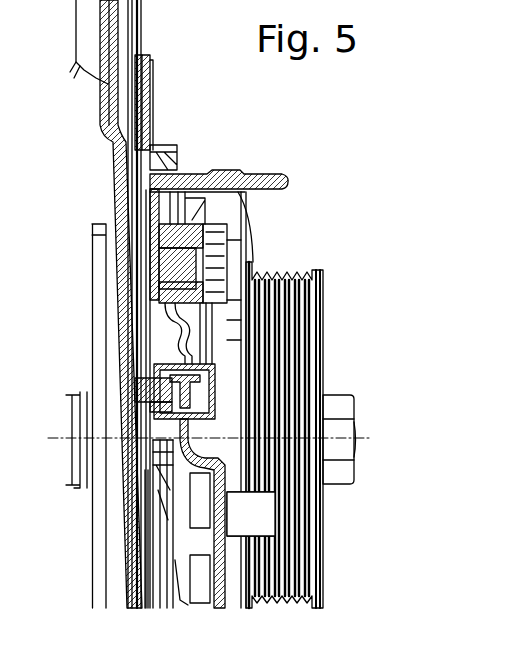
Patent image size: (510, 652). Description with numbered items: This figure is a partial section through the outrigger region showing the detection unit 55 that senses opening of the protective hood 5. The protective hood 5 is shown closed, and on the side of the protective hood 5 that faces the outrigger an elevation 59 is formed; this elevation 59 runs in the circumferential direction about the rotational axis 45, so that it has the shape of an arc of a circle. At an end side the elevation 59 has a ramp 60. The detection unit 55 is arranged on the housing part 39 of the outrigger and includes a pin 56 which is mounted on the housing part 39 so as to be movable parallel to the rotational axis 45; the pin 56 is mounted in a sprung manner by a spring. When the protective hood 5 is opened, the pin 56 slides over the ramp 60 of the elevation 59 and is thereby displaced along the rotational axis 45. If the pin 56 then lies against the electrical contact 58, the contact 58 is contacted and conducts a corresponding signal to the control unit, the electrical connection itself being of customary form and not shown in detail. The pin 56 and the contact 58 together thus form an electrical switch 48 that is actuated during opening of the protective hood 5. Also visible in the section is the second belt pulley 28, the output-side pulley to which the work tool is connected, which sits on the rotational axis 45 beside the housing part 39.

The protective hood 5 is at (112, 46).
The elevation 59 is at (150, 100).
The ramp 60 is at (176, 148).
The housing part 39 is at (241, 168).
The second belt pulley 28 is at (288, 282).
The electrical contact 58 is at (207, 400).
The detection unit 55 is at (137, 378).
The pin 56 is at (161, 397).
The electrical switch 48 is at (169, 426).
The rotational axis 45 is at (363, 440).